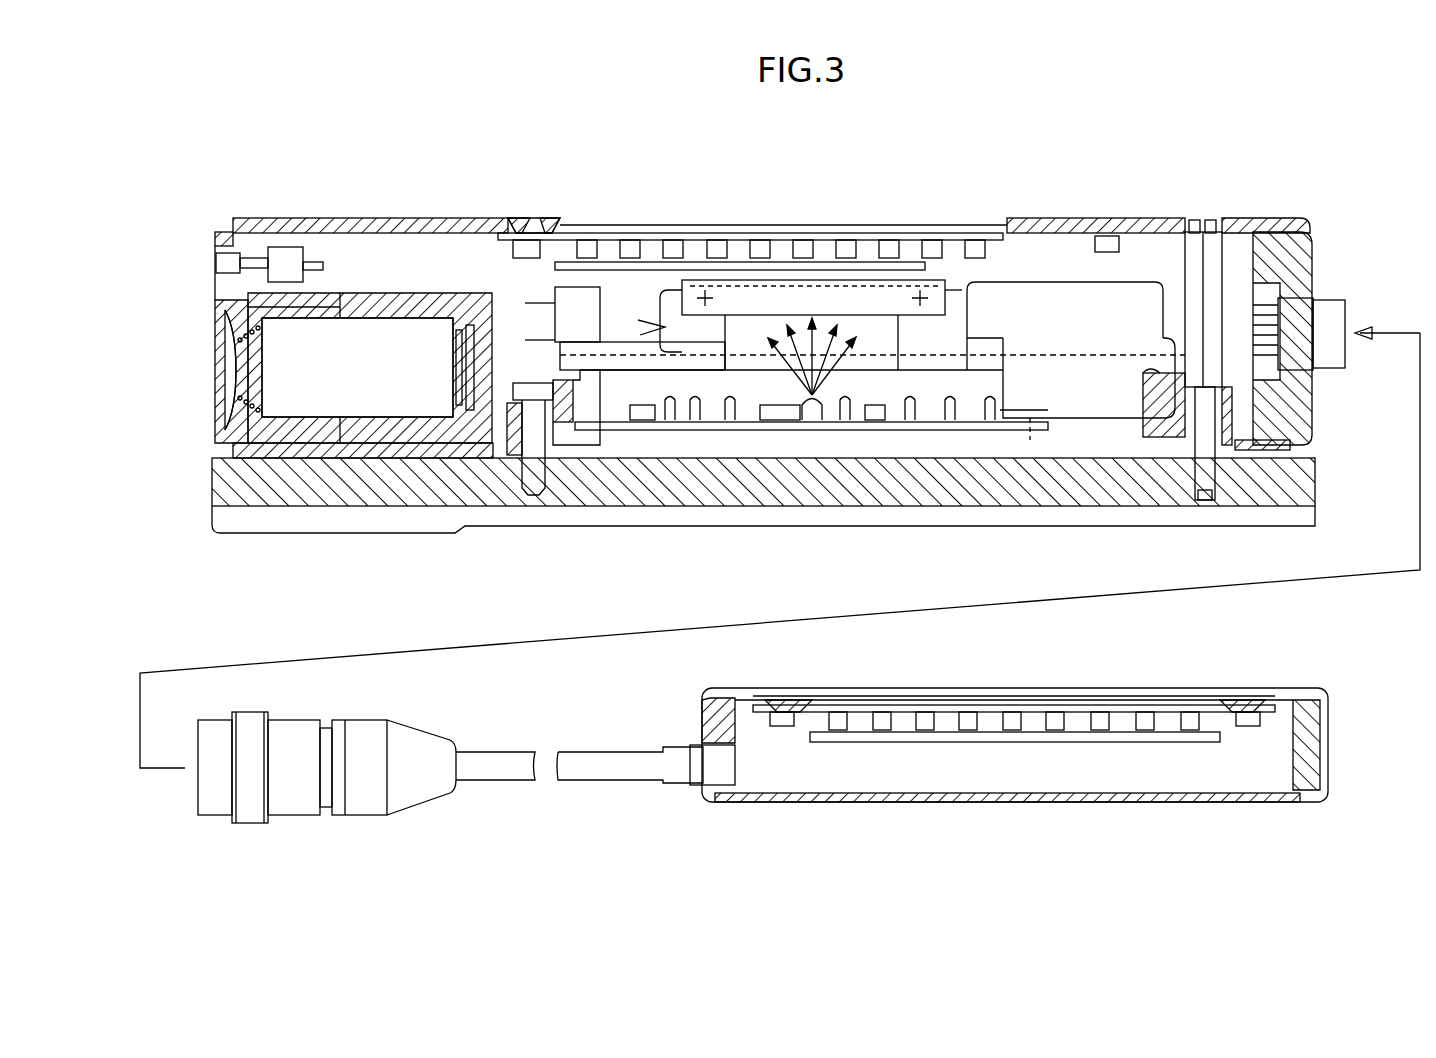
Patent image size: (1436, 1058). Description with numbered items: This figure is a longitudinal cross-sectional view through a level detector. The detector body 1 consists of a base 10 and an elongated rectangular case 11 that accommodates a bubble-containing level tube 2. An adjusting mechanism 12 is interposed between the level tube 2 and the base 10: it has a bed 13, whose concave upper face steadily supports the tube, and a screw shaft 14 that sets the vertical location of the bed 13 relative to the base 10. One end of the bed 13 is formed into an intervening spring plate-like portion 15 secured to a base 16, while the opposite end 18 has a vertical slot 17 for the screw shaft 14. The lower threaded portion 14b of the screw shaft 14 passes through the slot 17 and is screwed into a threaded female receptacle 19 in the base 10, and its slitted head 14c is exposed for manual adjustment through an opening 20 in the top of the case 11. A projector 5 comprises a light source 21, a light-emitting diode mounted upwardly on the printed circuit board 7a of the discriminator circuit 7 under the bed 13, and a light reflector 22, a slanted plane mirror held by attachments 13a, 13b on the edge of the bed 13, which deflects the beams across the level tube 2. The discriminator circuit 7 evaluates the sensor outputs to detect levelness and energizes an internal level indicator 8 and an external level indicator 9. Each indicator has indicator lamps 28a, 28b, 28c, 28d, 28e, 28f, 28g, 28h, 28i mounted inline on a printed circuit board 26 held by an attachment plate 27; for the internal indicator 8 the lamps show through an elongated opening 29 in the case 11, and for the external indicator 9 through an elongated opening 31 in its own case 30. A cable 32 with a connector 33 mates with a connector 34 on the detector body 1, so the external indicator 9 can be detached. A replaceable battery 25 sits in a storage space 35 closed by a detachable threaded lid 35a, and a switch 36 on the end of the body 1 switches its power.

The body 1 is at (398, 212).
The bubble-containing level tube 2 is at (1025, 300).
The projector 5 is at (849, 295).
The discriminator circuit 7 is at (795, 438).
The printed circuit board 7a is at (883, 430).
The internal level indicator 8 is at (809, 218).
The external level indicator 9 is at (1172, 690).
The base 10 is at (416, 483).
The case 11 is at (444, 228).
The adjusting mechanism 12 is at (1232, 280).
The bed 13 is at (1089, 341).
The attachment 13a is at (956, 300).
The attachment 13b is at (603, 257).
The screw shaft 14 is at (1299, 272).
The lower threaded portion 14b is at (1200, 398).
The slitted head 14c is at (1207, 235).
The intervening spring plate-like portion 15 is at (598, 403).
The base 16 is at (563, 445).
The vertical slot 17 is at (1188, 445).
The opposite end 18 is at (1225, 413).
The threaded female receptacle 19 is at (1202, 497).
The opening 20 is at (1195, 218).
The light source 21 is at (812, 420).
The light reflector 22 is at (756, 280).
The battery 25 is at (377, 380).
The printed circuit board 26 is at (690, 297).
The attachment plate 27 is at (566, 233).
The indicator lamp 28a is at (838, 730).
The indicator lamp 28b is at (883, 730).
The indicator lamp 28c is at (925, 730).
The indicator lamp 28d is at (968, 730).
The indicator lamp 28e is at (1012, 730).
The indicator lamp 28f is at (1058, 730).
The indicator lamp 28g is at (1085, 681).
The indicator lamp 28h is at (1147, 730).
The indicator lamp 28i is at (1195, 730).
The elongated opening 29 is at (912, 222).
The case 30 is at (1318, 735).
The elongated opening 31 is at (905, 695).
The cable 32 is at (579, 805).
The connector 33 is at (249, 800).
The connector 34 is at (1340, 305).
The storage space 35 is at (470, 240).
The detachable threaded lid 35a is at (224, 368).
The switch 36 is at (182, 240).